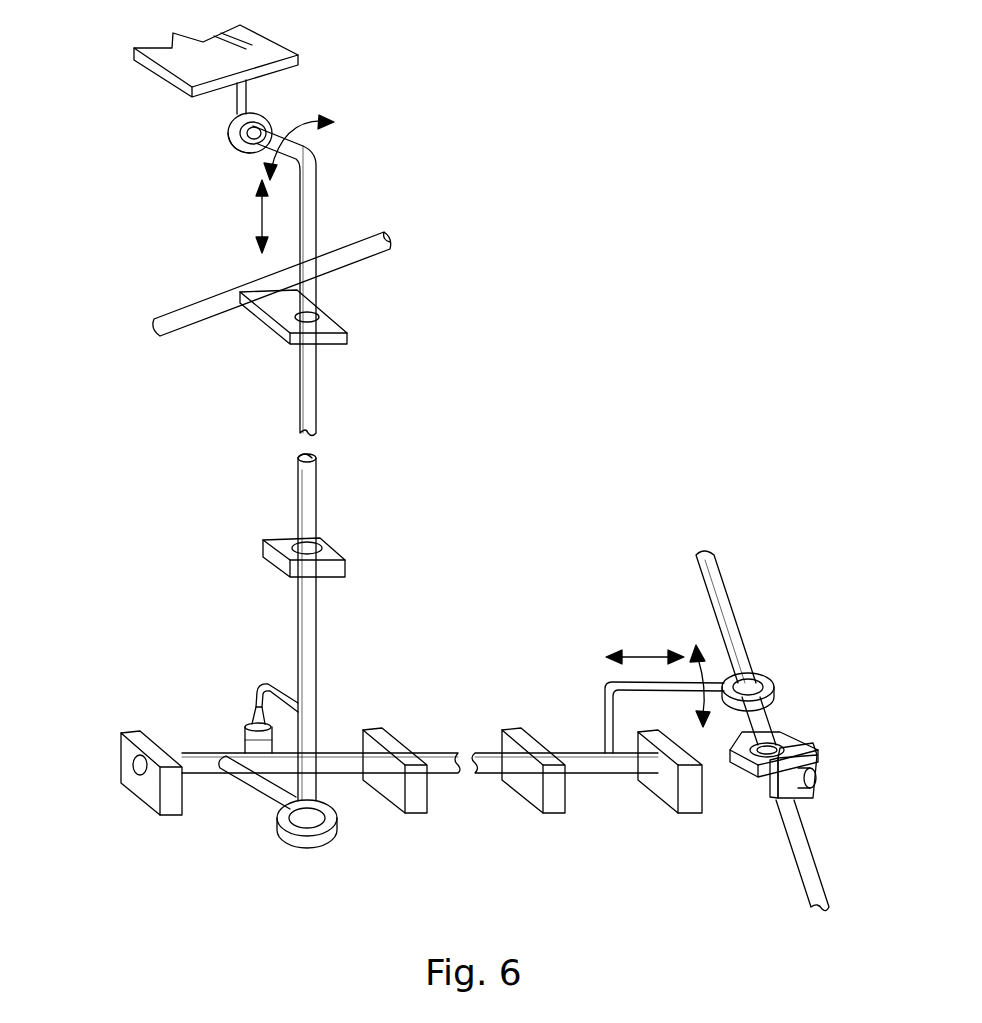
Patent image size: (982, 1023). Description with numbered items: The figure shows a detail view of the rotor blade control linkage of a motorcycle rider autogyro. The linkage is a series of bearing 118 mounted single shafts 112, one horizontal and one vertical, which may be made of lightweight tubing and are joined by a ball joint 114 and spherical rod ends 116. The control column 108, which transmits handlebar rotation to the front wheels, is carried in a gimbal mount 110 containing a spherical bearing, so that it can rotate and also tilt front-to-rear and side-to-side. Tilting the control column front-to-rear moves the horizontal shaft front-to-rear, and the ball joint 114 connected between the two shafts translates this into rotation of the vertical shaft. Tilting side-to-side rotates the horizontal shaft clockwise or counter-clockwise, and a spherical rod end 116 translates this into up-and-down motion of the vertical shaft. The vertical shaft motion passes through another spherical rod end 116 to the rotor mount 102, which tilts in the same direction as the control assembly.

The rotor mount 102 is at (298, 44).
The control column 108 is at (718, 593).
The gimbal mount 110 is at (803, 727).
The control linkage shaft 112 is at (314, 482).
The ball joint 114 is at (247, 727).
The spherical rod end 116 is at (228, 140).
The bearing 118 is at (331, 325).